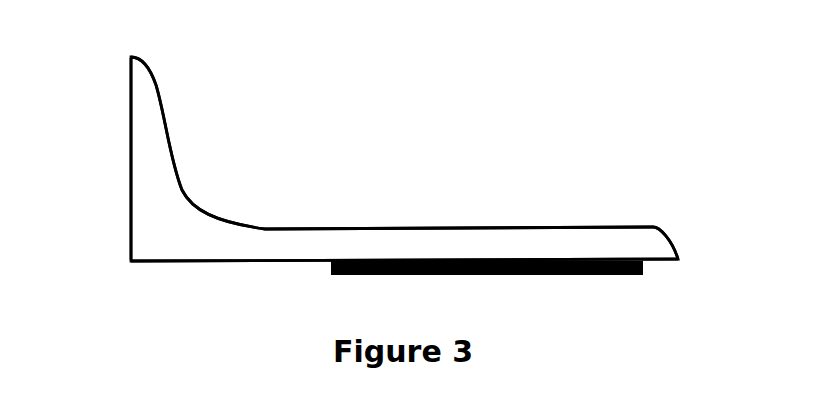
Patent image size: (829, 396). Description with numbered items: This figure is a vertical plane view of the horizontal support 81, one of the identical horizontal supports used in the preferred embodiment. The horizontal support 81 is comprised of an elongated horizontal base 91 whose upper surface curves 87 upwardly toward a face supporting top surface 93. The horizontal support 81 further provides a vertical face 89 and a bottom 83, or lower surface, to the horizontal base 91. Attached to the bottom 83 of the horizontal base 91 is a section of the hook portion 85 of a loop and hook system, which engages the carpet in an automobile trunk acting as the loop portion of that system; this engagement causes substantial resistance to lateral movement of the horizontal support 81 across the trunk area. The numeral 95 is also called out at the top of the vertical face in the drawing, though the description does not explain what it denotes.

The horizontal support 81 is at (190, 247).
The bottom 83 is at (180, 262).
The hook portion 85 is at (540, 276).
The upper surface curve 87 is at (222, 212).
The vertical face 89 is at (130, 168).
The horizontal base 91 is at (478, 227).
The face supporting top surface 93 is at (672, 240).
The top of back wall 95 is at (148, 66).